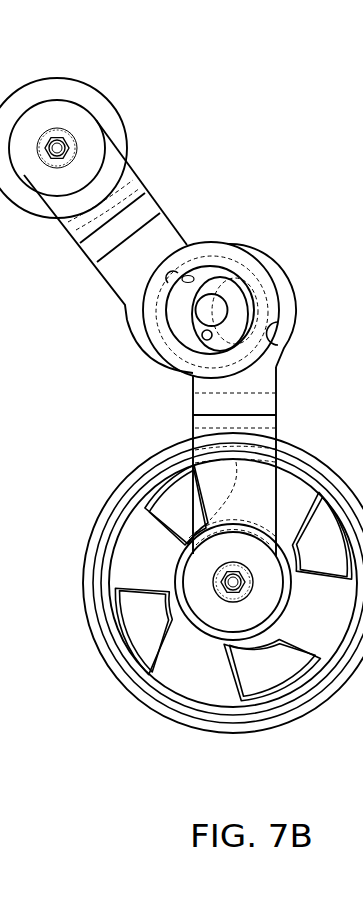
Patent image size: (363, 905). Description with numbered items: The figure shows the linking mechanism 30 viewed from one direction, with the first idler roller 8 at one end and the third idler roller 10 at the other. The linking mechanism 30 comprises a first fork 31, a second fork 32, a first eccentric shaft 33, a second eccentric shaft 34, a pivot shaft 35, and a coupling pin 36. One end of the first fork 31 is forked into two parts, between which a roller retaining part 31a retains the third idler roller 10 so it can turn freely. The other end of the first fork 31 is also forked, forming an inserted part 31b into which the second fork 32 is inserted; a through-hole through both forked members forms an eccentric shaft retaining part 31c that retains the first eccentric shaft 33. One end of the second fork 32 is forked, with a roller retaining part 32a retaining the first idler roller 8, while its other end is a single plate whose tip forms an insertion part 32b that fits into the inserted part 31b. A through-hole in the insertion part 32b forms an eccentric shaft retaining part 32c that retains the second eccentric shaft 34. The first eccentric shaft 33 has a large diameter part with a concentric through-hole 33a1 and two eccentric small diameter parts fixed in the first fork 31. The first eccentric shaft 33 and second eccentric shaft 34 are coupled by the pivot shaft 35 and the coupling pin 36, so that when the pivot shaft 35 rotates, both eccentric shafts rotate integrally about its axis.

The first idler roller 8 is at (73, 93).
The third idler roller 10 is at (144, 706).
The linking mechanism 30 is at (120, 358).
The first fork 31 is at (284, 382).
The roller retaining part 31a is at (200, 502).
The inserted part 31b is at (196, 390).
The eccentric shaft retaining part 31c is at (277, 320).
The second fork 32 is at (174, 212).
The roller retaining part 32a is at (96, 150).
The insertion part 32b is at (130, 342).
The eccentric shaft retaining part 32c is at (183, 297).
The first eccentric shaft 33 is at (248, 240).
The through-hole 33a1 is at (183, 297).
The second eccentric shaft 34 is at (140, 318).
The pivot shaft 35 is at (201, 338).
The coupling pin 36 is at (203, 340).